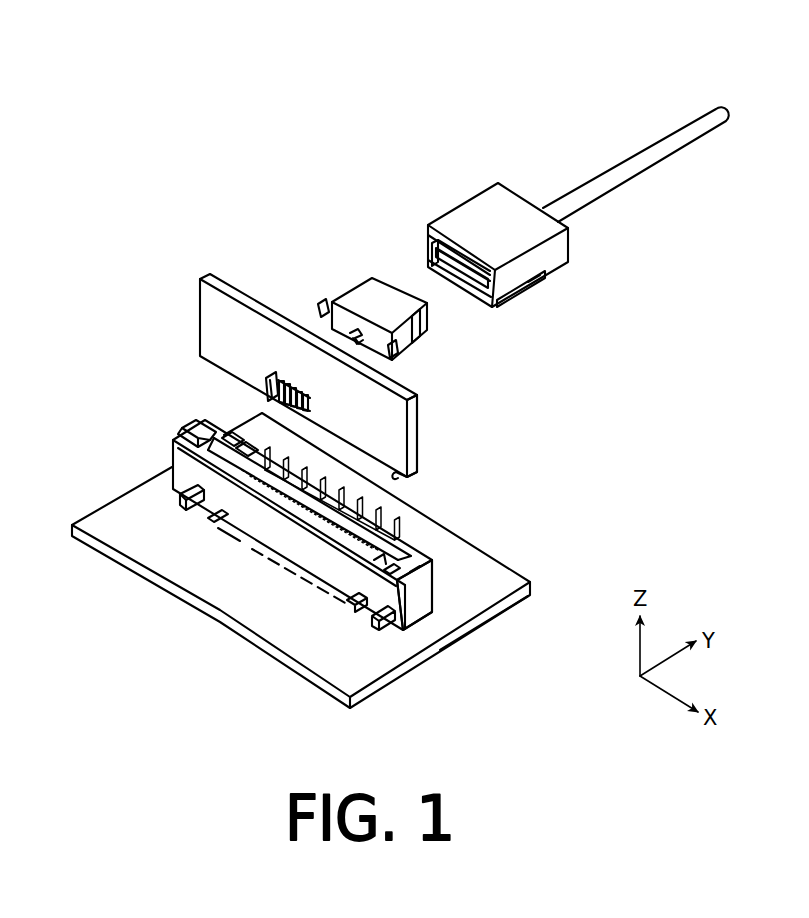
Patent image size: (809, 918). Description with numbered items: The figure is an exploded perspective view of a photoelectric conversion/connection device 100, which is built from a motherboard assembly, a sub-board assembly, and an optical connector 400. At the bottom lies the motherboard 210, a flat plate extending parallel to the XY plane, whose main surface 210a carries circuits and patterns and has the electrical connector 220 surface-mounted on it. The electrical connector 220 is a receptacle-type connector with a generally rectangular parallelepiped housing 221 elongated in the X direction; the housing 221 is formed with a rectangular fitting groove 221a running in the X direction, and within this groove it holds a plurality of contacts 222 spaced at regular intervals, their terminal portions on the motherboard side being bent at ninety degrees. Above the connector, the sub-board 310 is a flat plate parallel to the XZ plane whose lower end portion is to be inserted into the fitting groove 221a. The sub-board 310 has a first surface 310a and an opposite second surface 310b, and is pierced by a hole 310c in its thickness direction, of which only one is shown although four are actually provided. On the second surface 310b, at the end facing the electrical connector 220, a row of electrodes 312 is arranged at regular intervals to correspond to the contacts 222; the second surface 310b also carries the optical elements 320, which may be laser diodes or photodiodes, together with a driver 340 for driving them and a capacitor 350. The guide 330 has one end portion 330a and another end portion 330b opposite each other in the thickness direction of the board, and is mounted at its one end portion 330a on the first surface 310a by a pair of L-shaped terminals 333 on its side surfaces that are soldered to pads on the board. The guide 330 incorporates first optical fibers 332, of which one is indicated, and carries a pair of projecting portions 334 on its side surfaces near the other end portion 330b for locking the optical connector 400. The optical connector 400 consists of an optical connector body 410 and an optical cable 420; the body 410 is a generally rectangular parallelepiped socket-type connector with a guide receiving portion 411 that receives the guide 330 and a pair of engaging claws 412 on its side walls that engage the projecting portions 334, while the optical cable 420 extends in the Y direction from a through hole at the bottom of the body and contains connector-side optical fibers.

The photoelectric conversion/connection device 100 is at (428, 92).
The motherboard 210 is at (489, 583).
The main surface 210a is at (498, 594).
The electrical connector 220 is at (275, 550).
The housing 221 is at (426, 634).
The fitting groove 221a is at (397, 540).
The contacts 222 is at (358, 614).
The sub-board 310 is at (242, 288).
The first surface 310a is at (418, 418).
The second surface 310b is at (400, 479).
The hole 310c is at (303, 362).
The electrodes 312 is at (316, 407).
The optical elements 320 is at (265, 375).
The guide 330 is at (370, 265).
The one end portion 330a is at (341, 317).
The other end portion 330b is at (426, 306).
The first optical fiber 332 is at (362, 341).
The L-shaped terminals 333 is at (318, 307).
The projecting portions 334 is at (427, 334).
The driver 340 is at (270, 404).
The capacitor 350 is at (283, 406).
The optical connector 400 is at (593, 223).
The optical connector body 410 is at (491, 203).
The guide receiving portion 411 is at (453, 271).
The engaging claws 412 is at (534, 283).
The optical cable 420 is at (705, 141).